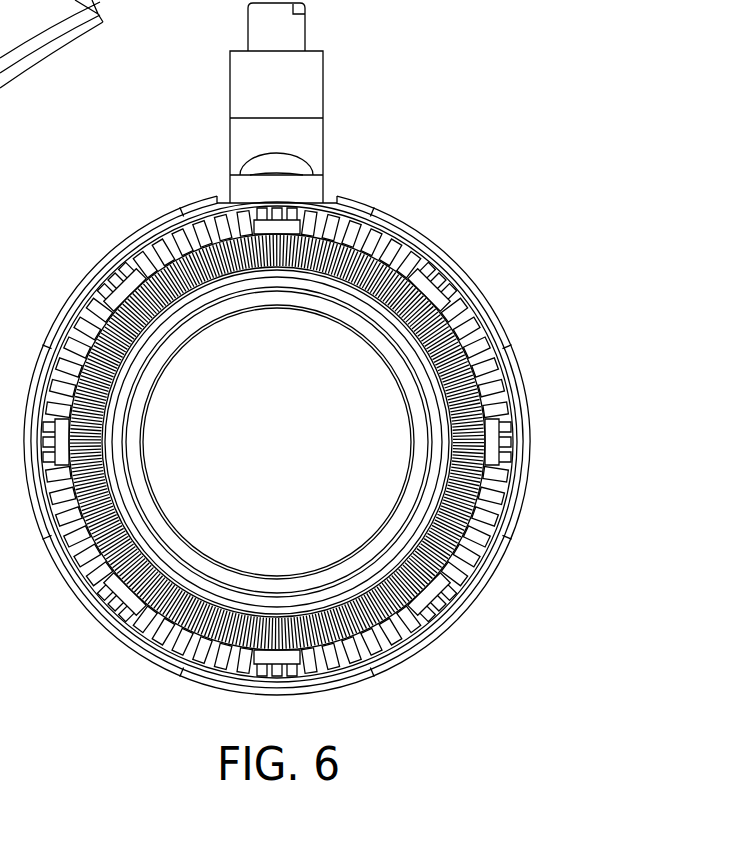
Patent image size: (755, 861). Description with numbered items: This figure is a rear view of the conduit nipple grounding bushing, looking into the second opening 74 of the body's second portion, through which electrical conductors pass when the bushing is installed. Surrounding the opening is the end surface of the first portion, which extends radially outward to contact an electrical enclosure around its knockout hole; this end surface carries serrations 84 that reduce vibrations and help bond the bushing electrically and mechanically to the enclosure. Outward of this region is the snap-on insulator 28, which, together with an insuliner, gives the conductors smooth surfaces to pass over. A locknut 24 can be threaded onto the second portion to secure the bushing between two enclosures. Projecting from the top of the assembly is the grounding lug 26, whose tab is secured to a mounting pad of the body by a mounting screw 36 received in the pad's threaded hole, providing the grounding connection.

The locknut 24 is at (462, 373).
The grounding lug 26 is at (349, 103).
The snap-on insulator 28 is at (445, 245).
The mounting screw 36 is at (298, 165).
The second opening 74 is at (292, 452).
The serrations 84 is at (468, 297).